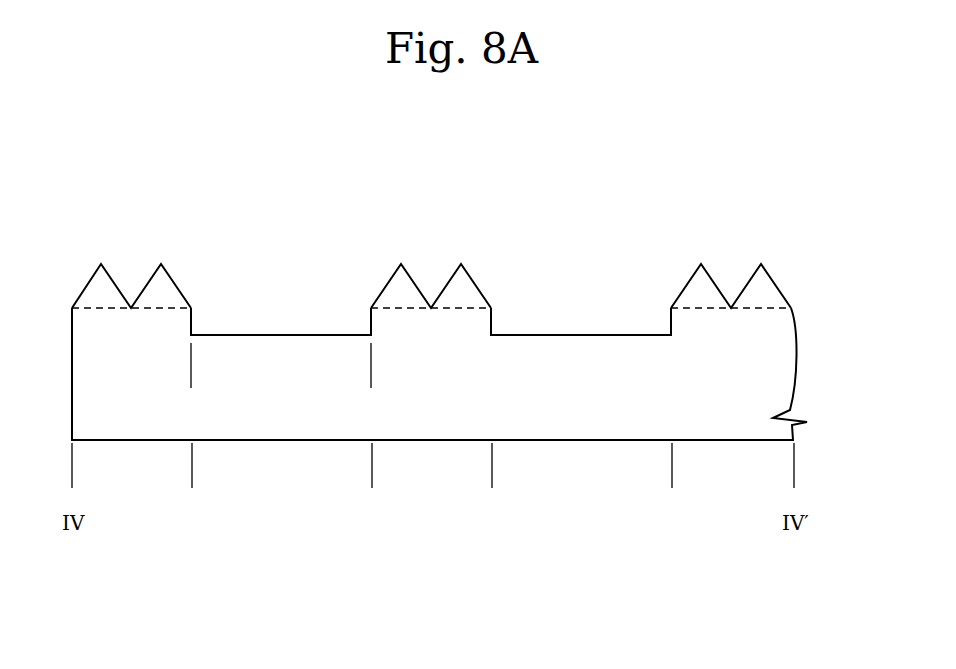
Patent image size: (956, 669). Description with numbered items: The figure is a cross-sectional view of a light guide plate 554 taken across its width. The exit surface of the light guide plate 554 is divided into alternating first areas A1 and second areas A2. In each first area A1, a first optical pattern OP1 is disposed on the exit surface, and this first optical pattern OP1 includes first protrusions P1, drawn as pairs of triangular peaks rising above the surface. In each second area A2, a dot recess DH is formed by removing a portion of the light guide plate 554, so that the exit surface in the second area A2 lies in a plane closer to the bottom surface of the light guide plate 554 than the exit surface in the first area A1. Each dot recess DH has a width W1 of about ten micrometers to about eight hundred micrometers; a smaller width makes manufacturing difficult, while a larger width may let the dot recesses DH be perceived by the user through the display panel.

The light guide plate 554 is at (644, 187).
The first optical pattern OP1 is at (162, 212).
The first protrusions P1 is at (99, 263).
The dot recesses DH is at (288, 308).
The width of the dot recess W1 is at (371, 382).
The first area A1 is at (794, 482).
The second area A2 is at (672, 482).